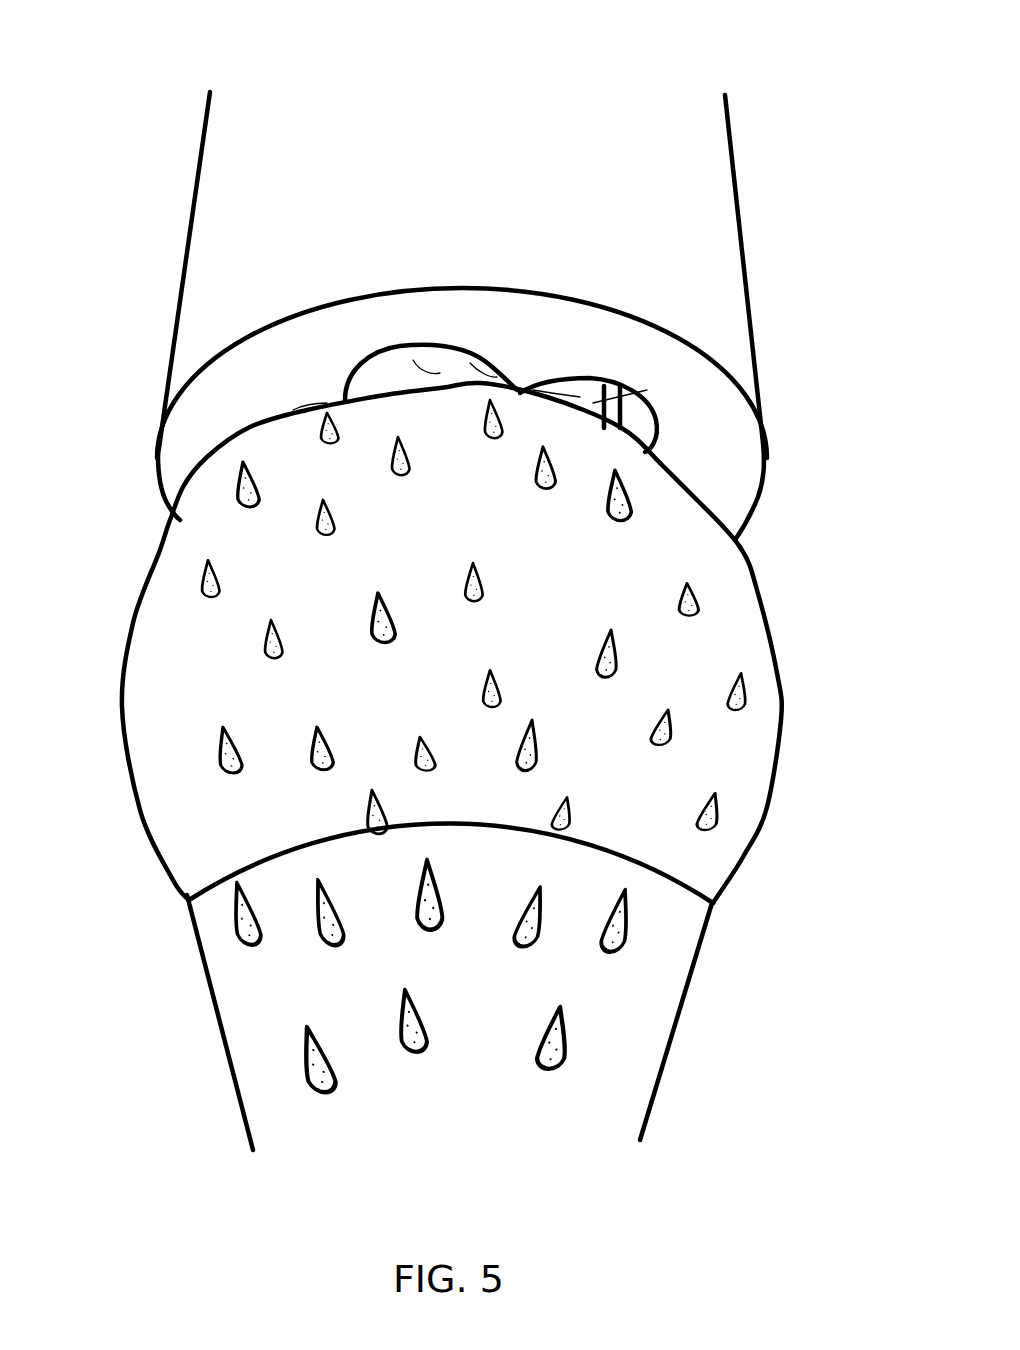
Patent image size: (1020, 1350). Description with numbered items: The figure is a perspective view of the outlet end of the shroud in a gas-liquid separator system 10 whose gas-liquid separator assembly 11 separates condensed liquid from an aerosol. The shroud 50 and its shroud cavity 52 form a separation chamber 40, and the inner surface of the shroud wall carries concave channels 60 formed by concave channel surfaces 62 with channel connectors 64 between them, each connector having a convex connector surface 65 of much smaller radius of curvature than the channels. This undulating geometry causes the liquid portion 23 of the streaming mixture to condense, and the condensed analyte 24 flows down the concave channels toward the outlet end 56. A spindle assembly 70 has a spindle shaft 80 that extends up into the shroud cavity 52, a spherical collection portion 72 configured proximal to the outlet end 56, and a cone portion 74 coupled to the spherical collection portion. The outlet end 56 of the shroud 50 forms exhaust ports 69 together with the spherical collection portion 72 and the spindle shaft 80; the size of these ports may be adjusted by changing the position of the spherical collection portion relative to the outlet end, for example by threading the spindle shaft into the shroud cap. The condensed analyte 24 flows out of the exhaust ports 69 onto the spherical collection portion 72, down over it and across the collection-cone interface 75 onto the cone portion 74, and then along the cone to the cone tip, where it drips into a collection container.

The gas-liquid separator system 10 is at (127, 127).
The gas-liquid separator assembly 11 is at (693, 147).
The shroud 50 is at (693, 177).
The concave channel surface 62 is at (220, 433).
The channel connector 64 is at (312, 428).
The shroud cavity 52 is at (370, 378).
The exhaust ports 69 is at (433, 372).
The concave channels 60 is at (497, 370).
The convex connector surface 65 is at (530, 387).
The separation chamber 40 is at (623, 387).
The outlet end 56 is at (710, 398).
The analyte 24 is at (763, 487).
The spindle shaft 80 is at (580, 393).
The liquid portion 23 is at (697, 589).
The spindle assembly 70 is at (733, 617).
The spherical collection portion 72 is at (733, 753).
The collection-cone interface 75 is at (713, 900).
The cone portion 74 is at (640, 1017).